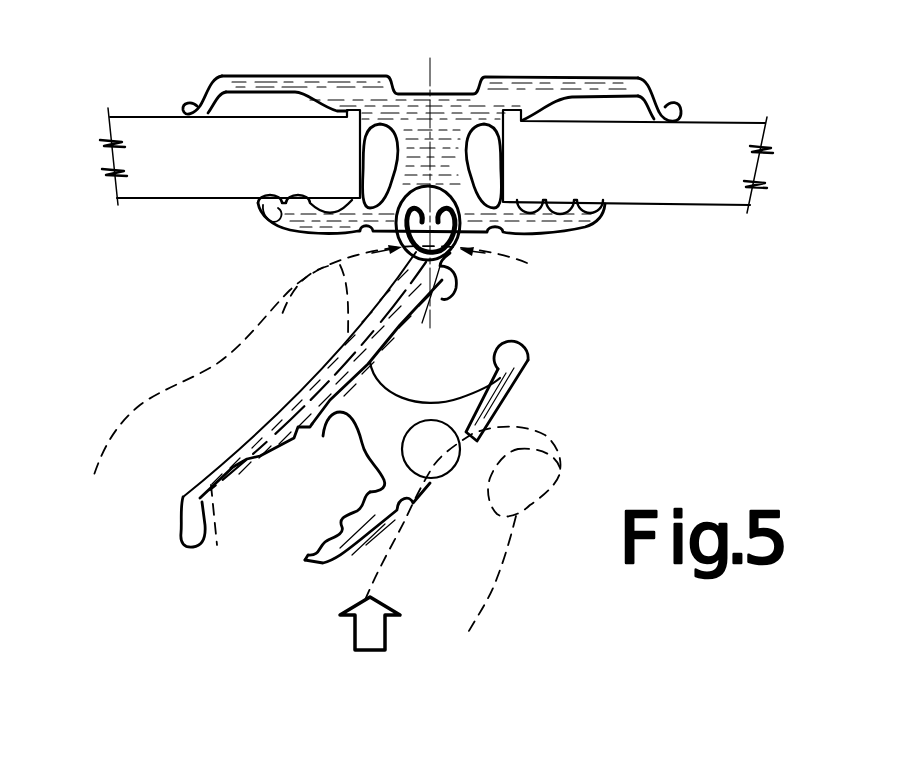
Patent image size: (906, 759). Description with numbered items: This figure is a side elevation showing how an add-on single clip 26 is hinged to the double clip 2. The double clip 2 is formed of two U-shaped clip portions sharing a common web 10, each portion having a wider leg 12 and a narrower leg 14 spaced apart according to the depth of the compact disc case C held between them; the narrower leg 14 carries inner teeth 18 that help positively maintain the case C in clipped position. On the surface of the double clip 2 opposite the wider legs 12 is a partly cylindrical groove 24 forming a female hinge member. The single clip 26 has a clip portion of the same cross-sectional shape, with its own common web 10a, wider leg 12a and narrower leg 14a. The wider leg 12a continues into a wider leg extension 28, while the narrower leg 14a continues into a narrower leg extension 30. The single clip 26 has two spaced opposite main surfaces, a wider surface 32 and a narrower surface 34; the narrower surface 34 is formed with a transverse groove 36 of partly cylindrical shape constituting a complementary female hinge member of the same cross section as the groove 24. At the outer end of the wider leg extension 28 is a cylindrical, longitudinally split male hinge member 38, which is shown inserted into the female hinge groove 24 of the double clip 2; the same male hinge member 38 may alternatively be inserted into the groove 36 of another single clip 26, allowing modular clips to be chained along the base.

The double clip 2 is at (538, 66).
The common web 10 is at (443, 120).
The wider leg 12 is at (272, 76).
The narrower leg 14 is at (313, 229).
The inner teeth 18 is at (270, 213).
The partly cylindrical groove 24 is at (445, 203).
The single clip 26 is at (548, 343).
The wider leg extension 28 is at (420, 324).
The narrower leg extension 30 is at (527, 397).
The wider surface 32 is at (321, 368).
The narrower surface 34 is at (380, 543).
The transverse groove 36 is at (424, 426).
The male hinge member 38 is at (447, 262).
The common web 10a is at (368, 437).
The wider leg 12a is at (254, 432).
The narrower leg 14a is at (333, 560).
The case C is at (123, 153).